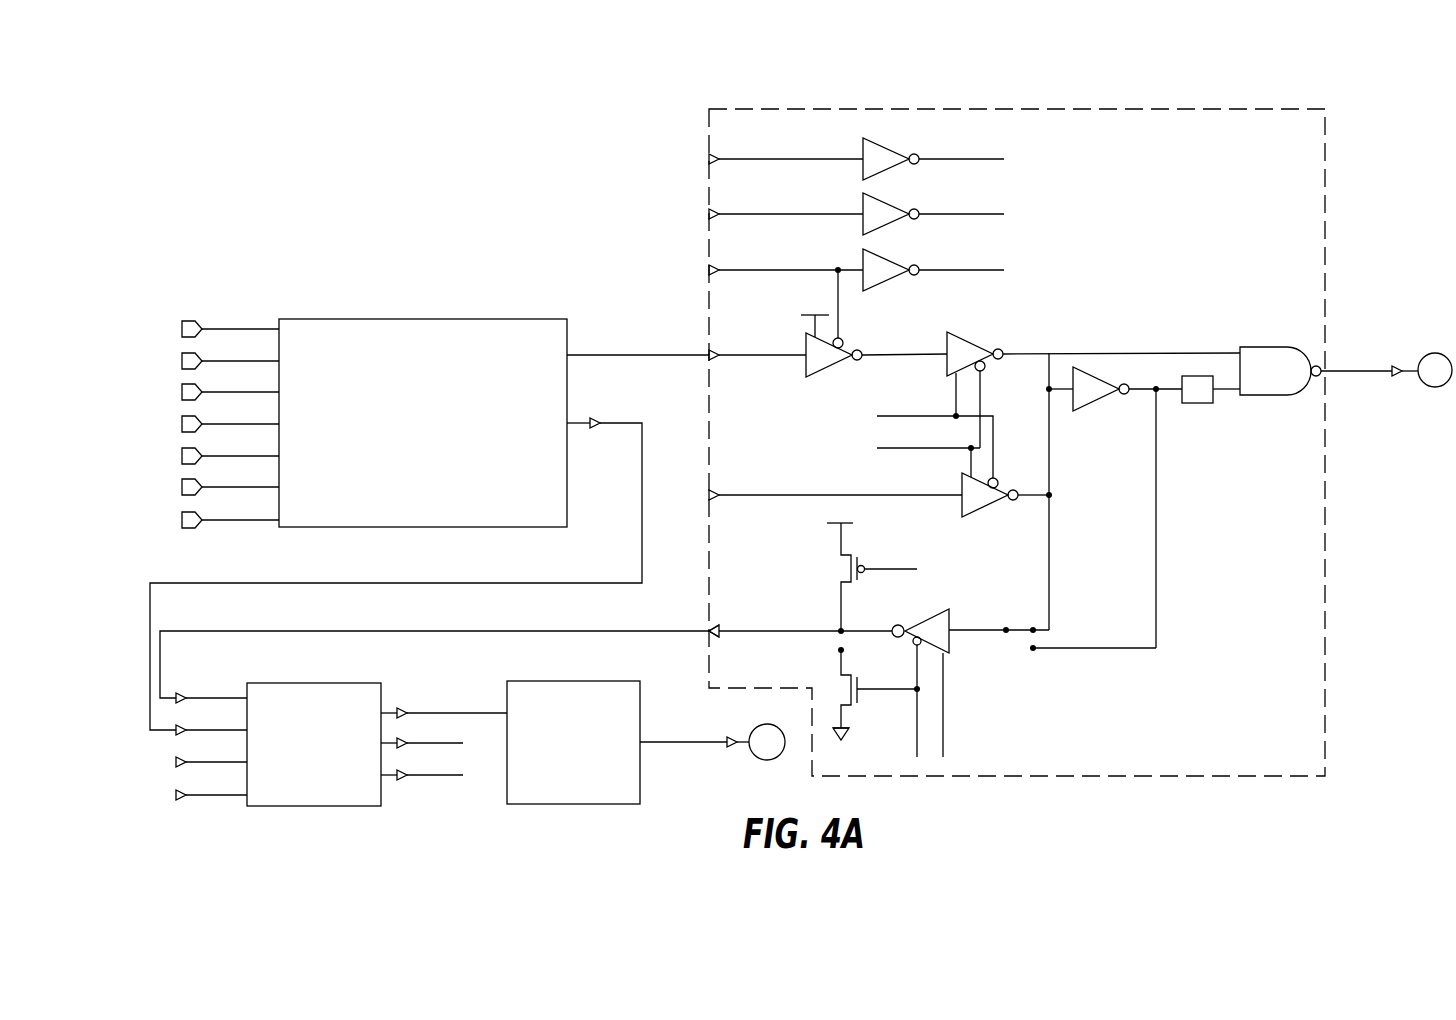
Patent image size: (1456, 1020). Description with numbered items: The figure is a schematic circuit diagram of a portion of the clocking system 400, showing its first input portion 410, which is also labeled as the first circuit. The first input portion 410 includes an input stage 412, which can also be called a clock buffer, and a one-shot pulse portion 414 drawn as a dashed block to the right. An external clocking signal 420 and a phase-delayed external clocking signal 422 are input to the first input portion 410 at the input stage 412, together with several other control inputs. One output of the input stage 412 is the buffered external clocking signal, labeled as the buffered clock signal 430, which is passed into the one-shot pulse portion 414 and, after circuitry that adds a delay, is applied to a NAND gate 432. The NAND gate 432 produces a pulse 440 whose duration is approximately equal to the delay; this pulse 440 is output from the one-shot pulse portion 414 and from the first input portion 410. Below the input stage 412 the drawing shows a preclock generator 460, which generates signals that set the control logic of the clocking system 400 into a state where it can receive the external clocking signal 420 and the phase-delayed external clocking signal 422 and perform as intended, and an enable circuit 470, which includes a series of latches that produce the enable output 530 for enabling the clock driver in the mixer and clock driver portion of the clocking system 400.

The clocking system 400 is at (1346, 70).
The first input portion 410 is at (316, 216).
The input stage 412 is at (426, 319).
The one-shot pulse portion 414 is at (1008, 110).
The external clocking signal (XClk) 420 is at (182, 362).
The phase-delayed external clocking signal (XClkF) 422 is at (182, 393).
The buffered clock signal (Clkinf) 430 is at (639, 360).
The NAND gate 432 is at (1261, 346).
The pulse 440 is at (1360, 376).
The preclock generator 460 is at (582, 681).
The enable circuit 470 is at (322, 683).
The EnClkDrvF output 530 is at (683, 747).